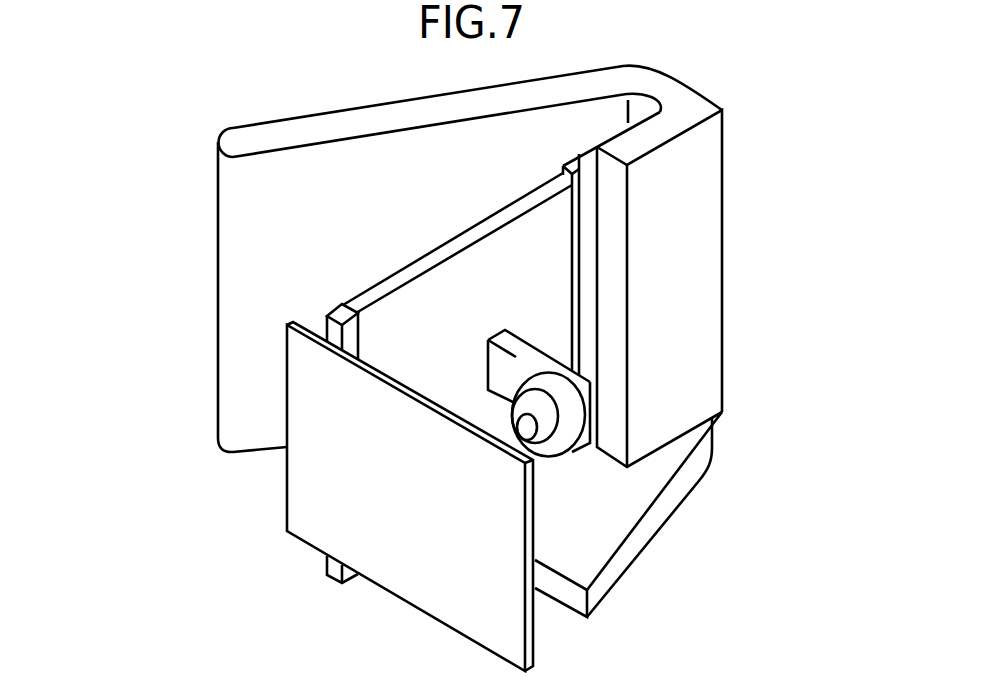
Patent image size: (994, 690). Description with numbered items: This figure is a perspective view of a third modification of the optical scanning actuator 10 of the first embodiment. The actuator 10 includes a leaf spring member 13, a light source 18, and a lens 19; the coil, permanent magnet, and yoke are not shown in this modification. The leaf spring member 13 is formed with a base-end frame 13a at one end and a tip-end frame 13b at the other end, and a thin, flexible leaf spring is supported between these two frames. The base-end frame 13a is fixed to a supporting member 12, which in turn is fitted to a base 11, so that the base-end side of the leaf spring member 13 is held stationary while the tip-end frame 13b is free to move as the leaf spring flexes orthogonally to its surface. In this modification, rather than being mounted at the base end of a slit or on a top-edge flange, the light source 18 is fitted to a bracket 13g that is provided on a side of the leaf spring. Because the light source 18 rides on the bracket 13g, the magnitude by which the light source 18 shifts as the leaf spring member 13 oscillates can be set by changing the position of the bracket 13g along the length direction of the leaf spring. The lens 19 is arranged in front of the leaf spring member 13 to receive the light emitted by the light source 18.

The optical scanning actuator 10 is at (165, 112).
The base 11 is at (635, 504).
The supporting member 12 is at (275, 135).
The leaf spring member 13 is at (420, 256).
The base-end frame 13a is at (585, 215).
The tip-end frame 13b is at (337, 330).
The bracket 13g is at (537, 362).
The light source 18 is at (570, 418).
The lens 19 is at (316, 492).